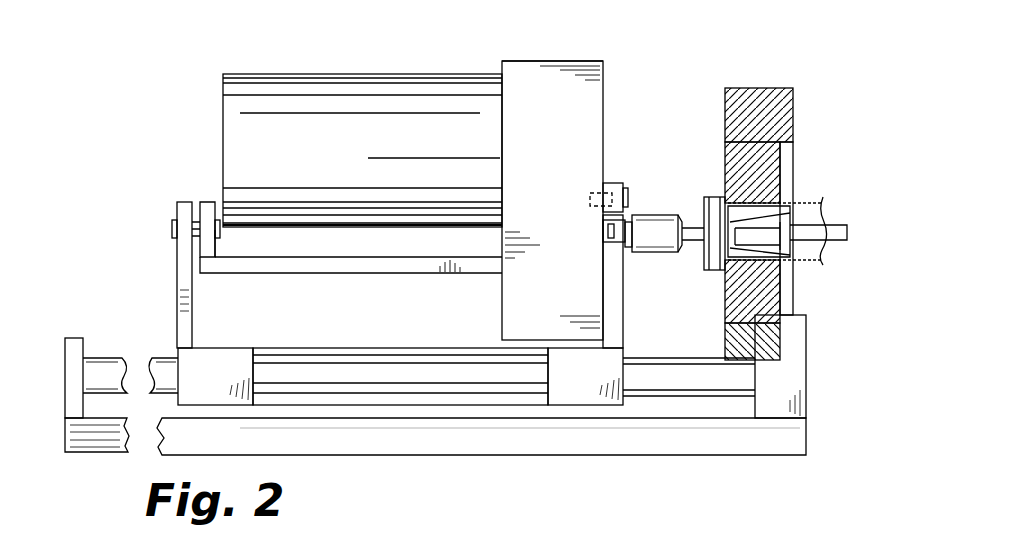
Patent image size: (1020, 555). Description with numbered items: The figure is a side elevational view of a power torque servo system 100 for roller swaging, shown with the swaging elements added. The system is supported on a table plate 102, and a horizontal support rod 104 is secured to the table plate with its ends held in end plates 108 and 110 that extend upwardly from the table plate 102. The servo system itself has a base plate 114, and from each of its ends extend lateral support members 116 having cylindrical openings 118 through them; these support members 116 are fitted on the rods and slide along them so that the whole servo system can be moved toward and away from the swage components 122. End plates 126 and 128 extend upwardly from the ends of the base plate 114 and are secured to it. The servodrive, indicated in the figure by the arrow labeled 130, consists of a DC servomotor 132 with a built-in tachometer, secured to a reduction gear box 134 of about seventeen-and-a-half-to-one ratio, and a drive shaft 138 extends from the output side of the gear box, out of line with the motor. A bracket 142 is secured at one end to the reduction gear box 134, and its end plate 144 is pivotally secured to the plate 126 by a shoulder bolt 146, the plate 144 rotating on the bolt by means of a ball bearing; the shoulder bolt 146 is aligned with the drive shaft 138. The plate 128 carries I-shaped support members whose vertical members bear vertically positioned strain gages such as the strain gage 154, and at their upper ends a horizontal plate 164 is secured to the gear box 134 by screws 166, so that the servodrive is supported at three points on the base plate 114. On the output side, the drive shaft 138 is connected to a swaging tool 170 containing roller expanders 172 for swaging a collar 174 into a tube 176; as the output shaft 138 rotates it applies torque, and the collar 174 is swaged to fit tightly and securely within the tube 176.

The power torque servo system 100 is at (168, 163).
The table plate 102 is at (529, 440).
The horizontal support rod 104 is at (663, 378).
The end plate 108 is at (74, 338).
The end plate 110 is at (782, 354).
The base plate 114 is at (348, 350).
The lateral support member 116 is at (213, 360).
The cylindrical opening 118 is at (545, 34).
The swage components 122 is at (765, 78).
The end plate 126 is at (182, 272).
The end plate 128 is at (624, 283).
The drive assembly 130 is at (590, 42).
The DC servomotor 132 is at (332, 167).
The reduction gear box 134 is at (568, 113).
The drive shaft 138 is at (642, 215).
The bracket 142 is at (295, 262).
The bracket end plate 144 is at (208, 202).
The shoulder bolt 146 is at (217, 236).
The strain gage 154 is at (603, 240).
The horizontal plate 164 is at (616, 183).
The screw 166 is at (627, 188).
The swaging tool 170 is at (714, 197).
The roller expander 172 is at (770, 232).
The collar 174 is at (770, 205).
The tube 176 is at (803, 263).